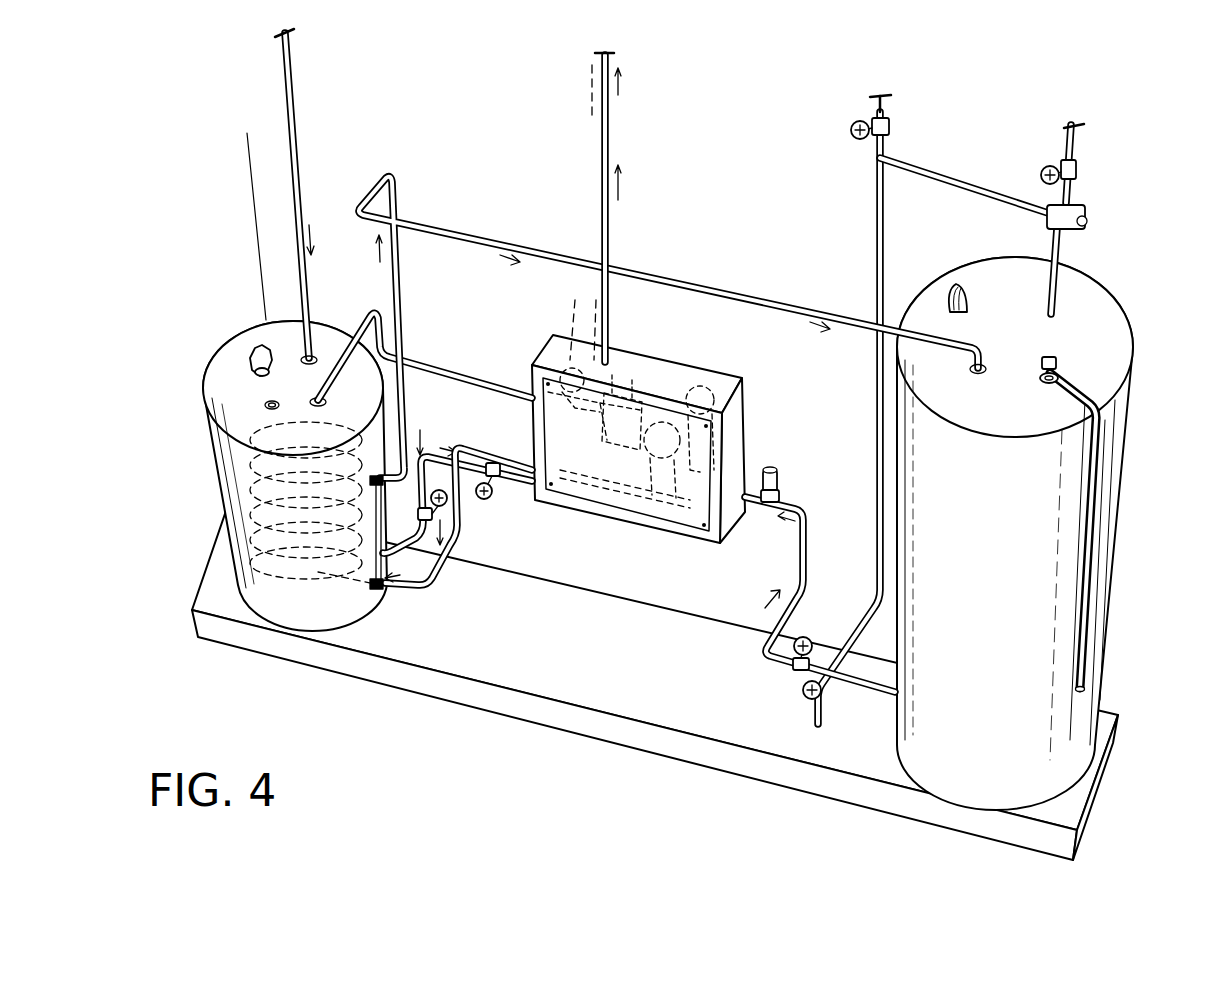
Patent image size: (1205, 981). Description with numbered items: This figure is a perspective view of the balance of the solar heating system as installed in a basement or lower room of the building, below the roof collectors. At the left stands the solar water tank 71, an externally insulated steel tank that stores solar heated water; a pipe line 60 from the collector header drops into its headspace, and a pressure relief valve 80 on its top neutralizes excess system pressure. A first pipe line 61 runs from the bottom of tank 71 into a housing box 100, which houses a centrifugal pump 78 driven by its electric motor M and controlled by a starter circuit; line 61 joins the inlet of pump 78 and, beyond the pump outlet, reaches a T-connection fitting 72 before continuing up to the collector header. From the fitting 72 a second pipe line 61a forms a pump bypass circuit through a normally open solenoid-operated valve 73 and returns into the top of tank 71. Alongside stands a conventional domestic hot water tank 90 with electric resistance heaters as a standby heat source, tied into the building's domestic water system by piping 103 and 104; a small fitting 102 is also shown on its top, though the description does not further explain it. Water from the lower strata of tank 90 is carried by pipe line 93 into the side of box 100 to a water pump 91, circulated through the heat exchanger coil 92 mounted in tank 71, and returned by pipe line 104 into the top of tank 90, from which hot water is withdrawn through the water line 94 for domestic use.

The pipe line 60 is at (300, 152).
The first pipe line 61 is at (612, 240).
The second pipe line 61a is at (440, 367).
The solar water tank 71 is at (215, 490).
The T-connection fitting 72 is at (598, 408).
The solenoid-operated valve 73 is at (571, 362).
The centrifugal pump 78 is at (664, 428).
The pressure relief valve 80 is at (252, 352).
The domestic hot water tank 90 is at (1017, 532).
The water pump 91 is at (704, 385).
The heat exchanger coil 92 is at (318, 577).
The pipe line 93 is at (607, 482).
The water line 94 is at (1082, 627).
The housing box 100 is at (622, 358).
The relief fitting 102 is at (968, 298).
The piping 103 is at (885, 223).
The pipe line 104 is at (409, 406).
The motor M is at (640, 398).